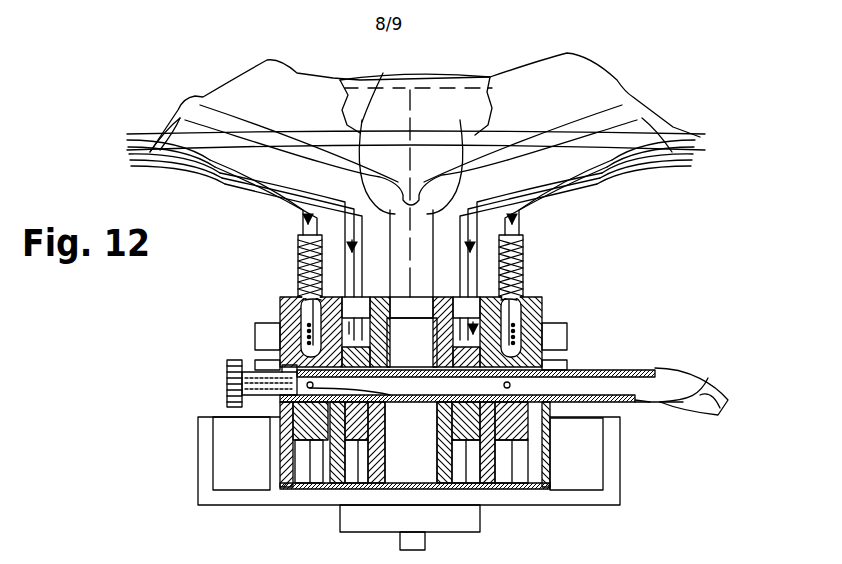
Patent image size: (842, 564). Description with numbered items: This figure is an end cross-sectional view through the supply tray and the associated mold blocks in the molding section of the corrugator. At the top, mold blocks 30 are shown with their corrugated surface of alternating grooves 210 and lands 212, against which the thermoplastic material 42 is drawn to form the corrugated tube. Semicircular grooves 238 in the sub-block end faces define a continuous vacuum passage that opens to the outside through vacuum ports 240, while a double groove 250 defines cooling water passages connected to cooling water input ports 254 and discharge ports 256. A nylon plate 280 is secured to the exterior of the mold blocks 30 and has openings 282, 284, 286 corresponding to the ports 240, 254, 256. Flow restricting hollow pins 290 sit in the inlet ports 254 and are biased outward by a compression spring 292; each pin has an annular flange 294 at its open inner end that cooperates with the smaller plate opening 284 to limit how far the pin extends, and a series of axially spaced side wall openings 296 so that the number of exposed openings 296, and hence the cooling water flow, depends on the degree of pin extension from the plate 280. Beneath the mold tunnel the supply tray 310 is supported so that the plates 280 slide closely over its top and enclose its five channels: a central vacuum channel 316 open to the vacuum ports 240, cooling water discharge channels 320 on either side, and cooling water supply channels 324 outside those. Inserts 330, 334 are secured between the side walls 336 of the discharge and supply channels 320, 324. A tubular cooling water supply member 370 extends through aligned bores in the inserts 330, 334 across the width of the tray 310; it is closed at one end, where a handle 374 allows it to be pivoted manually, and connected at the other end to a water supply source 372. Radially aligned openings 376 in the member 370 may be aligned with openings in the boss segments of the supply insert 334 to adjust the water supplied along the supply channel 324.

The mold blocks 30 is at (232, 78).
The thermoplastic material 42 is at (445, 80).
The grooves 210 is at (280, 123).
The lands 212 is at (277, 60).
The semicircular grooves 238 is at (183, 125).
The vacuum ports 240 is at (400, 325).
The double groove 250 is at (133, 135).
The cooling water input ports 254 is at (300, 230).
The discharge ports 256 is at (303, 262).
The nylon plate 280 is at (285, 313).
The plate opening 282 is at (423, 297).
The plate opening 284 is at (303, 305).
The plate opening 286 is at (305, 277).
The flow restricting hollow pins 290 is at (268, 332).
The compression spring 292 is at (298, 250).
The annular flange 294 is at (306, 300).
The side wall openings 296 is at (305, 338).
The supply tray 310 is at (190, 445).
The central vacuum channel 316 is at (428, 361).
The cooling water discharge channels 320 is at (428, 470).
The cooling water supply channels 324 is at (300, 372).
The discharge channel inserts 330 is at (357, 443).
The cooling water supply insert 334 is at (315, 433).
The side walls 336 is at (280, 465).
The tubular cooling water supply member 370 is at (640, 408).
The water supply source 372 is at (722, 378).
The handle 374 is at (237, 384).
The radially aligned openings 376 is at (290, 400).